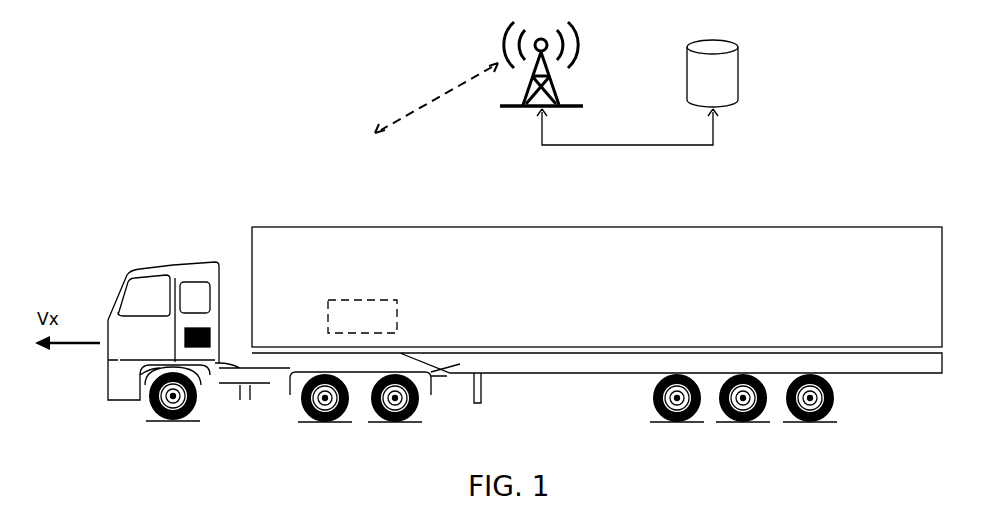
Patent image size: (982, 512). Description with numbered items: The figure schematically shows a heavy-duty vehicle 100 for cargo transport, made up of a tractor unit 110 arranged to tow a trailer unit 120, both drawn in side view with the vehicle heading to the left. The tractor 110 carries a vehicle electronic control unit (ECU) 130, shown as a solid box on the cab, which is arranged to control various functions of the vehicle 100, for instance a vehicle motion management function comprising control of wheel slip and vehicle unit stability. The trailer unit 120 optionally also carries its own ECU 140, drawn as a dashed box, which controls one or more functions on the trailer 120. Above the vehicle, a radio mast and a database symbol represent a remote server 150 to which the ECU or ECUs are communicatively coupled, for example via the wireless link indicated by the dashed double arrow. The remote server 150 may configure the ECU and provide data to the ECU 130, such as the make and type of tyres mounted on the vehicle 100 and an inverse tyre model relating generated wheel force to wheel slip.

The heavy-duty vehicle 100 is at (116, 83).
The tractor unit 110 is at (155, 265).
The trailer unit 120 is at (447, 236).
The vehicle electronic control unit 130 is at (213, 333).
The ECU 140 is at (362, 316).
The remote server 150 is at (742, 86).